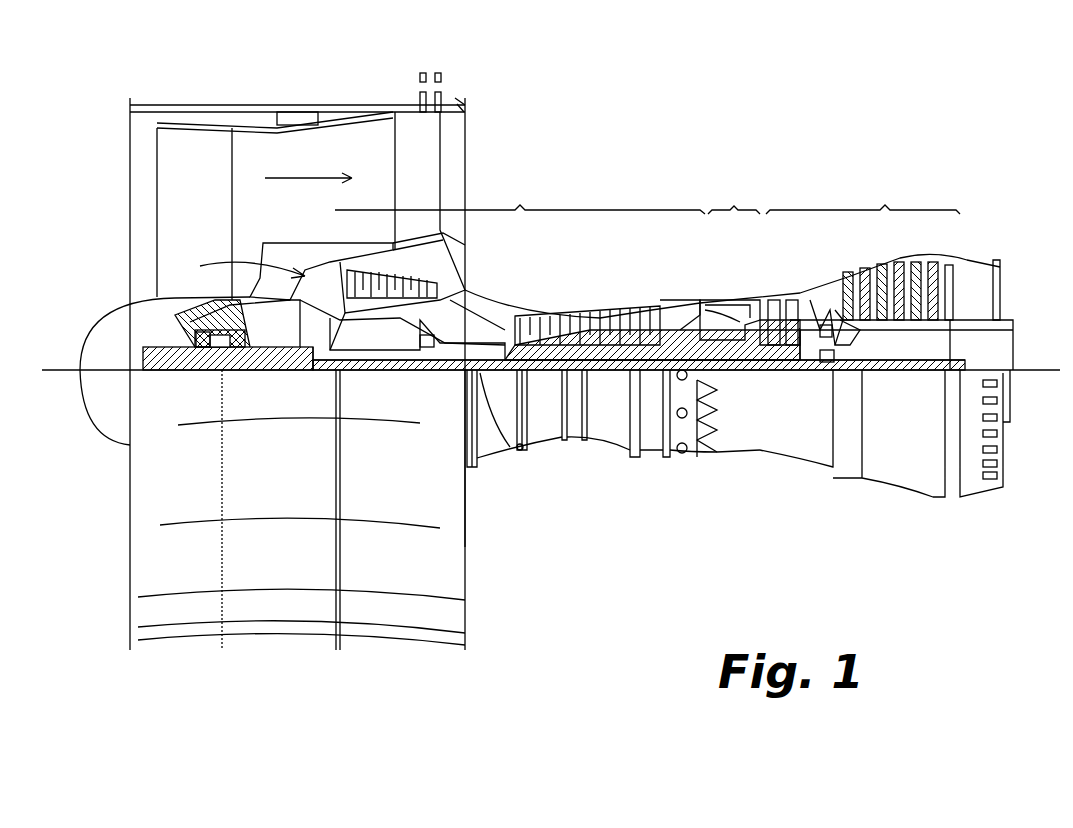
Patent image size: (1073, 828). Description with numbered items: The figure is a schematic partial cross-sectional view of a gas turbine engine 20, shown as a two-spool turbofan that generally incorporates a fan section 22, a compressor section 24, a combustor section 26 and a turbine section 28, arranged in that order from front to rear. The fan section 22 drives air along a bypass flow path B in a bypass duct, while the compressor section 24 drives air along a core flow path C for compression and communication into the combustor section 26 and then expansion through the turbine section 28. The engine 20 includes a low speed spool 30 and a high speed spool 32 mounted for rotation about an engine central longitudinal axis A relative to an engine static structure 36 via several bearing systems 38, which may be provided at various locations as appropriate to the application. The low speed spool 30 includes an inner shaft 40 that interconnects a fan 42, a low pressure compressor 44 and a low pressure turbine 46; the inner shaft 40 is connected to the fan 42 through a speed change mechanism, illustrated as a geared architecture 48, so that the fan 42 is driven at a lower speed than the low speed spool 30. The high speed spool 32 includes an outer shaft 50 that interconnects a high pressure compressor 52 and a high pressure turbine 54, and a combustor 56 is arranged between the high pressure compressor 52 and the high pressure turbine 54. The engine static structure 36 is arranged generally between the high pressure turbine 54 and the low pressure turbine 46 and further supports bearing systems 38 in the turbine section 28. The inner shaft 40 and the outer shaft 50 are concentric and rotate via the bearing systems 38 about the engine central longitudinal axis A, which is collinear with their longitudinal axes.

The gas turbine engine 20 is at (735, 135).
The fan section 22 is at (322, 73).
The compressor section 24 is at (520, 198).
The combustor section 26 is at (734, 198).
The turbine section 28 is at (863, 198).
The low speed spool 30 is at (617, 390).
The high speed spool 32 is at (672, 300).
The engine static structure 36 is at (657, 470).
The bearing systems 38 is at (205, 375).
The inner shaft 40 is at (517, 450).
The fan 42 is at (201, 229).
The low pressure compressor 44 is at (447, 243).
The low pressure turbine 46 is at (893, 255).
The geared architecture 48 is at (305, 375).
The outer shaft 50 is at (725, 372).
The high pressure compressor 52 is at (585, 316).
The high pressure turbine 54 is at (775, 300).
The combustor 56 is at (720, 318).
The engine central longitudinal axis A is at (1040, 370).
The bypass flow path B is at (298, 178).
The core flow path C is at (241, 268).